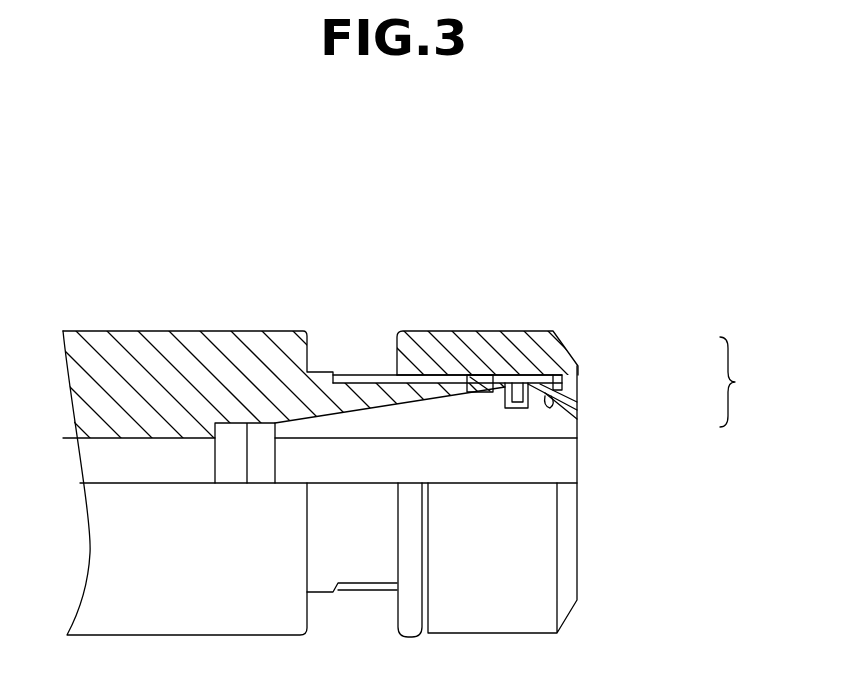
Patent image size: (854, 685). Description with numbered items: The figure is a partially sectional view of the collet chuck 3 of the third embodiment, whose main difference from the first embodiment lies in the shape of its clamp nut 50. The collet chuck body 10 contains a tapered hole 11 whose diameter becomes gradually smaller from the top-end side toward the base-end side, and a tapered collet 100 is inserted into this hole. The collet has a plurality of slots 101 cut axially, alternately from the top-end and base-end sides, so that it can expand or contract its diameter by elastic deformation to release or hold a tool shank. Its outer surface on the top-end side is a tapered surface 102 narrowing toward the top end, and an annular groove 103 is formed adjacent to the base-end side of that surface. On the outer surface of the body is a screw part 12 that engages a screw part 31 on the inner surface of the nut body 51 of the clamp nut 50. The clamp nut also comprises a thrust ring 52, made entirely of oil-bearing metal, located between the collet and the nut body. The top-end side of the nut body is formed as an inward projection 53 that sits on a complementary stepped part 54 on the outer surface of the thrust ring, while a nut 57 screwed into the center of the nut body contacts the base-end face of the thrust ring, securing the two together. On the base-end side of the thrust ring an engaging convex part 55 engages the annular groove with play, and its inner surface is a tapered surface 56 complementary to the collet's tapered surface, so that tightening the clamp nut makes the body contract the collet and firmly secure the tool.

The collet chuck 3 is at (505, 200).
The collet chuck body 10 is at (163, 352).
The tapered hole 11 is at (307, 408).
The screw part 12 is at (403, 338).
The screw part 31 is at (434, 372).
The clamp nut 50 is at (745, 382).
The nut body 51 is at (577, 364).
The thrust ring 52 is at (580, 411).
The projection 53 is at (580, 381).
The stepped part 54 is at (576, 400).
The engaging convex part 55 is at (525, 384).
The tapered surface 56 is at (544, 384).
The nut 57 is at (497, 377).
The tapered collet 100 is at (563, 428).
The slots 101 is at (372, 423).
The tapered surface 102 is at (558, 378).
The annular groove 103 is at (523, 407).